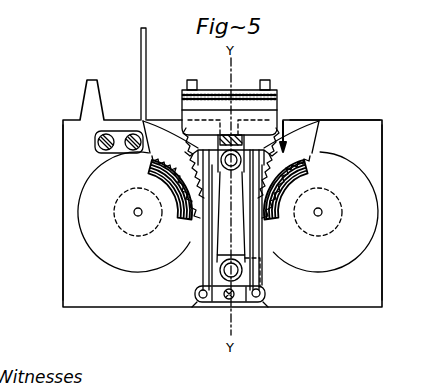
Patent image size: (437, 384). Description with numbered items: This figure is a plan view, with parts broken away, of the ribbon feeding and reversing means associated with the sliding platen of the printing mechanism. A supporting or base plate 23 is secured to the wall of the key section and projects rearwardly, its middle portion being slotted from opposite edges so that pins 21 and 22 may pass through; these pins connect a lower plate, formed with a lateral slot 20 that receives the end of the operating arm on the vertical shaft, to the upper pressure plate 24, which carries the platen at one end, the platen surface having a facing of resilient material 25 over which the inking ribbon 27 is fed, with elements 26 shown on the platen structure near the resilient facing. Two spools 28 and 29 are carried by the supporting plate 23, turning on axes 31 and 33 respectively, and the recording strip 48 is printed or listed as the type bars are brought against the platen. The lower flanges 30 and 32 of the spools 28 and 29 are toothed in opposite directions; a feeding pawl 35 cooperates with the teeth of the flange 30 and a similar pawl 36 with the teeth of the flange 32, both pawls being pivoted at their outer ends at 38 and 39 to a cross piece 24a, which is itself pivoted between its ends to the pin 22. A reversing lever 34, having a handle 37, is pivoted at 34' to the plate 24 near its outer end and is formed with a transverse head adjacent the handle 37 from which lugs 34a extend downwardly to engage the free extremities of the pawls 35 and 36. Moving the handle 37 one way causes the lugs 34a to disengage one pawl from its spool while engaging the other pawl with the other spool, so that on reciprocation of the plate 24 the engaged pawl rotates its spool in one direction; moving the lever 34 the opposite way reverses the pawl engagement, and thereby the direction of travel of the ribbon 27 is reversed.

The lateral slot 20 is at (266, 262).
The pin 21 is at (250, 135).
The pin 22 is at (240, 302).
The supporting or base plate 23 is at (366, 128).
The pressure plate 24 is at (262, 110).
The cross piece 24a is at (229, 298).
The facing of resilient material 25 is at (234, 95).
The lugs 26 is at (190, 86).
The inking ribbon 27 is at (256, 90).
The spool 28 is at (362, 188).
The spool 29 is at (122, 258).
The lower flange 30 is at (305, 163).
The axis 31 is at (322, 213).
The lower flange 32 is at (163, 130).
The axis 33 is at (134, 213).
The reversing lever 34 is at (231, 217).
The lugs 34a is at (300, 134).
The pivot 34' is at (191, 254).
The feeding pawl 35 is at (256, 262).
The feeding pawl 36 is at (198, 270).
The handle 37 is at (232, 170).
The pivot 38 is at (258, 298).
The pivot 39 is at (203, 298).
The recording strip 48 is at (229, 85).